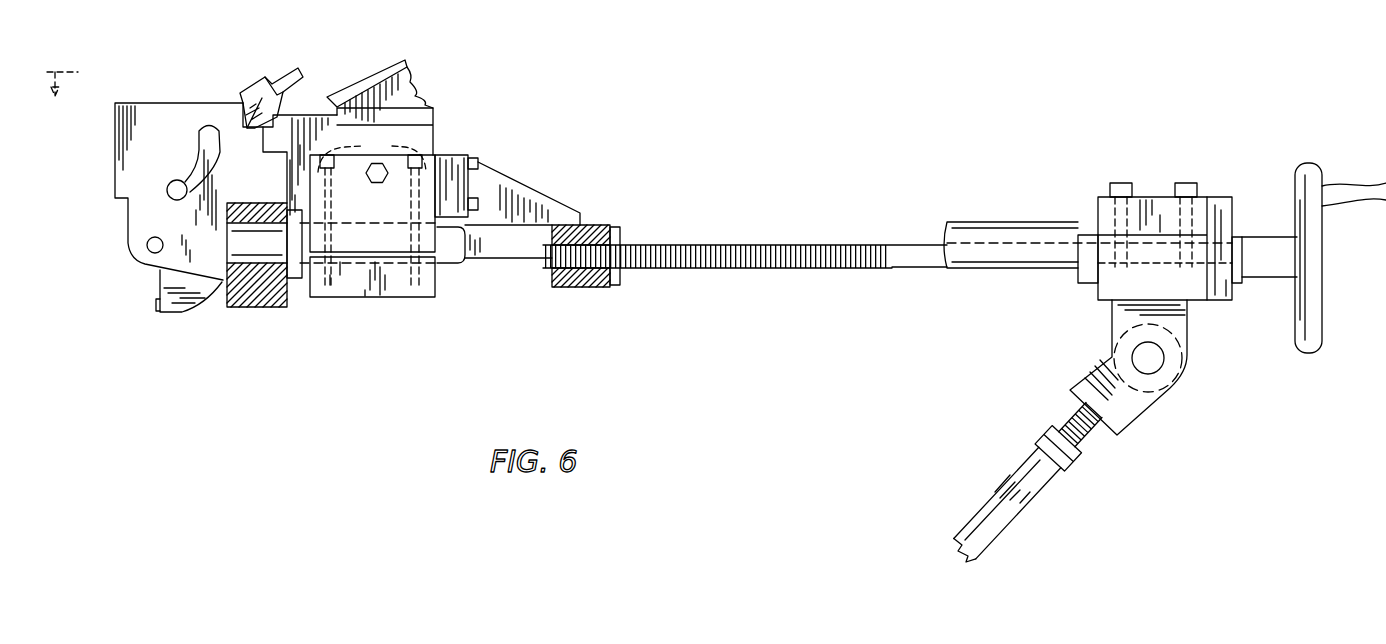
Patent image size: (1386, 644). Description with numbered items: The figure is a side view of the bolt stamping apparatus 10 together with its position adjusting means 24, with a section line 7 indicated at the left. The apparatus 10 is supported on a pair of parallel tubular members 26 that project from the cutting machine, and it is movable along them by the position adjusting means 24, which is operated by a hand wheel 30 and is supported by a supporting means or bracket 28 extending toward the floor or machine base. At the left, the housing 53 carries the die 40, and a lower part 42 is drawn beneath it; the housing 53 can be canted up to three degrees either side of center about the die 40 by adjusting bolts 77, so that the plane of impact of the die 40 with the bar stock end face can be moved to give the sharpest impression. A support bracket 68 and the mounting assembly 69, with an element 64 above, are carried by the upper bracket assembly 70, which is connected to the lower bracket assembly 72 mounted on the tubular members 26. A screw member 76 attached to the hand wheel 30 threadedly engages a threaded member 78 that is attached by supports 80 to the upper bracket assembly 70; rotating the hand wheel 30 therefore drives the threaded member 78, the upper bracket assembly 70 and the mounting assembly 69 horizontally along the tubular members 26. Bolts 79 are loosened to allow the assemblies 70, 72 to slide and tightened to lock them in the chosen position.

The section line 7- 7 is at (62, 97).
The bolt stamping apparatus 10 is at (337, 63).
The position adjusting means 24 is at (1152, 197).
The tubular members 26 is at (452, 262).
The supporting means 28 is at (1050, 485).
The hand wheel 30 is at (1313, 170).
The die 40 is at (153, 305).
The lower bracket piece 42 is at (190, 307).
The housing 53 is at (150, 113).
The cutter mount 64 is at (279, 77).
The support bracket 68 is at (403, 90).
The mounting assembly 69 is at (430, 137).
The upper bracket assembly 70 is at (427, 177).
The lower bracket assembly 72 is at (383, 298).
The screw member 76 is at (838, 245).
The adjusting bolts 77 is at (406, 4).
The threaded member 78 is at (620, 228).
The bolts 79 is at (372, 150).
The supports 80 is at (513, 193).